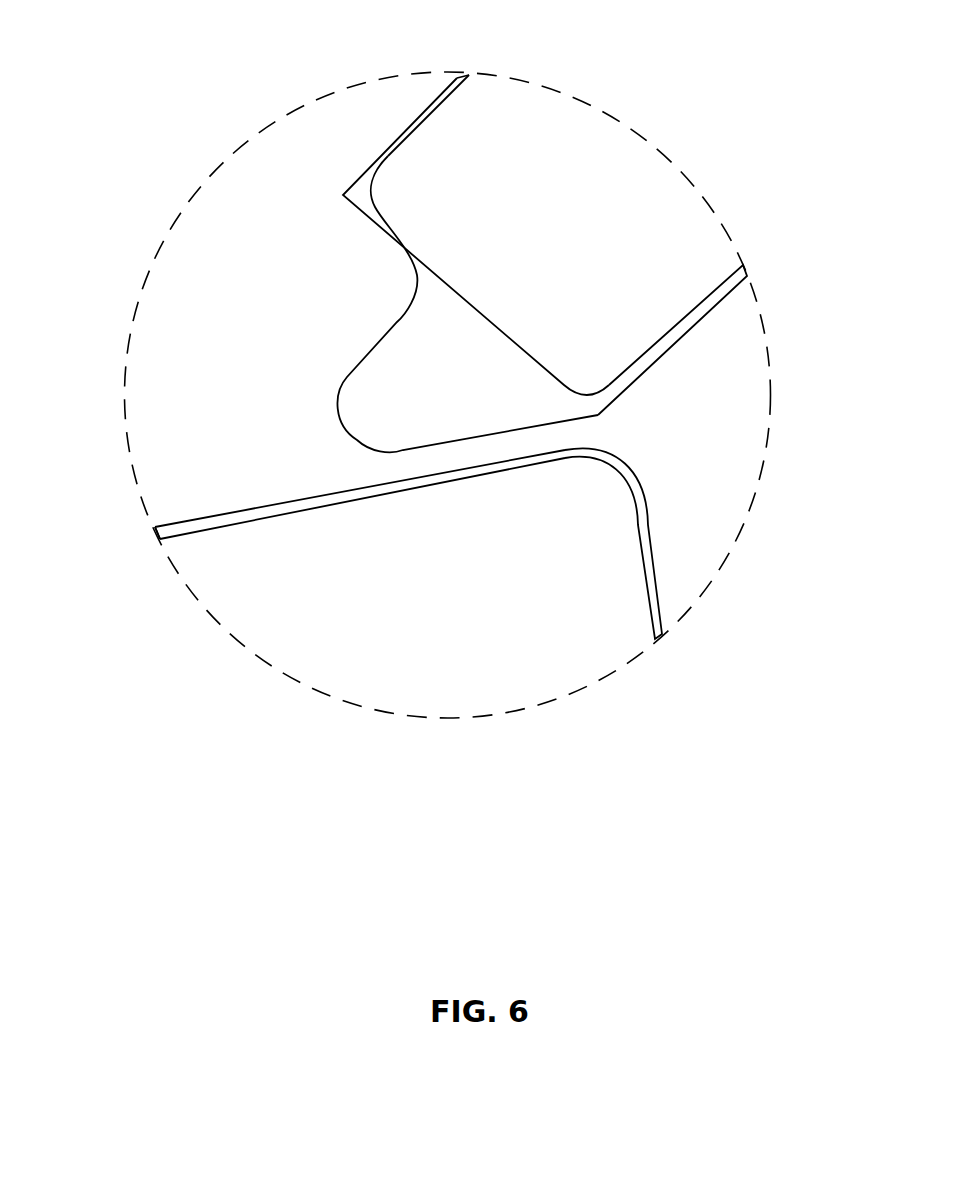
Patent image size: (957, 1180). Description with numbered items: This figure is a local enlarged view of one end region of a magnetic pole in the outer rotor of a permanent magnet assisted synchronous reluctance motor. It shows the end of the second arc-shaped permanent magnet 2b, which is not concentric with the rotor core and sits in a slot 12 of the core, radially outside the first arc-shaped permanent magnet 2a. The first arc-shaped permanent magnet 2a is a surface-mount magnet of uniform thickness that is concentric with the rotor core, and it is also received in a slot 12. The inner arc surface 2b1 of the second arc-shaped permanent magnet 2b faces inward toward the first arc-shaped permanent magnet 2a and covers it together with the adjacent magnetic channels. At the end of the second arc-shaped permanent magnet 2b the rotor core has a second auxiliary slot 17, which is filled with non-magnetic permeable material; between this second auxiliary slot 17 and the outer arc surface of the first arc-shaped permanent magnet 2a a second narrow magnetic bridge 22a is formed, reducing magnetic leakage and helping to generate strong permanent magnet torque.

The first arc-shaped permanent magnet 2a is at (242, 608).
The second arc-shaped permanent magnet 2b is at (483, 105).
The inner arc surface 2b1 is at (702, 305).
The slot 12 is at (402, 128).
The second auxiliary slot 17 is at (403, 387).
The second narrow magnetic bridge 22a is at (477, 452).